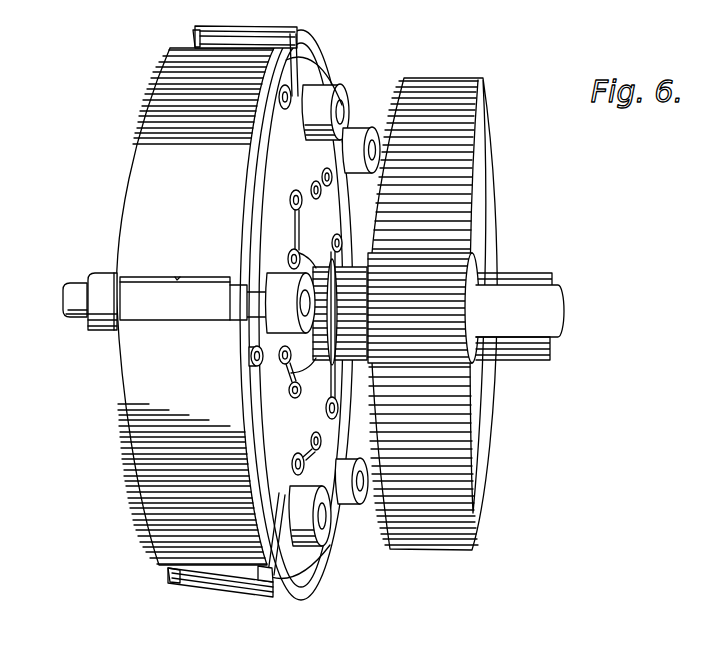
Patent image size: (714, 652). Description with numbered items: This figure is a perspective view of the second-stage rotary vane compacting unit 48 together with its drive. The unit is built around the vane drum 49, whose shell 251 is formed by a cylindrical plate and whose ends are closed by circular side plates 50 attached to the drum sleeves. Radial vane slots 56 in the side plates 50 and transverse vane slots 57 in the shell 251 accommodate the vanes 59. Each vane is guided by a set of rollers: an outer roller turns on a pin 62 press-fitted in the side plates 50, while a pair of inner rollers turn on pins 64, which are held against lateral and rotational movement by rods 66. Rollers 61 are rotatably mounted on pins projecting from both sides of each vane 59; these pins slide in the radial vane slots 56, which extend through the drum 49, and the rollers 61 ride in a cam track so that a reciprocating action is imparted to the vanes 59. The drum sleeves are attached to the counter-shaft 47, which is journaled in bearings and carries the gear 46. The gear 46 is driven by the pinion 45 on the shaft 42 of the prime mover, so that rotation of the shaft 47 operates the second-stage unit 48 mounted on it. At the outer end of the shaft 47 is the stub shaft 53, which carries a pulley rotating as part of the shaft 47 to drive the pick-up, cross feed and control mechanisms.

The shaft 42 is at (552, 300).
The pinion 45 is at (474, 255).
The gear 46 is at (480, 80).
The shaft 47 is at (540, 360).
The second-stage rotary vane unit 48 is at (306, 598).
The vane drum 49 is at (257, 603).
The circular side plates 50 is at (284, 172).
The stub shaft 53 is at (73, 315).
The radial vane slots 56 is at (294, 64).
The transverse vane slots 57 is at (193, 33).
The vanes 59 is at (274, 46).
The rollers 61 is at (100, 292).
The pin 62 is at (320, 86).
The pins 64 is at (290, 203).
The rods 66 is at (289, 253).
The shell 251 is at (140, 158).